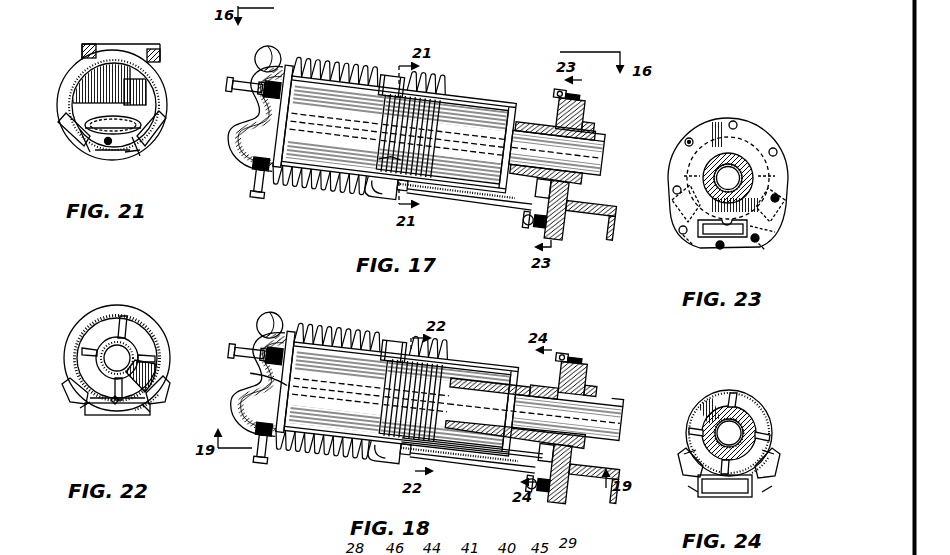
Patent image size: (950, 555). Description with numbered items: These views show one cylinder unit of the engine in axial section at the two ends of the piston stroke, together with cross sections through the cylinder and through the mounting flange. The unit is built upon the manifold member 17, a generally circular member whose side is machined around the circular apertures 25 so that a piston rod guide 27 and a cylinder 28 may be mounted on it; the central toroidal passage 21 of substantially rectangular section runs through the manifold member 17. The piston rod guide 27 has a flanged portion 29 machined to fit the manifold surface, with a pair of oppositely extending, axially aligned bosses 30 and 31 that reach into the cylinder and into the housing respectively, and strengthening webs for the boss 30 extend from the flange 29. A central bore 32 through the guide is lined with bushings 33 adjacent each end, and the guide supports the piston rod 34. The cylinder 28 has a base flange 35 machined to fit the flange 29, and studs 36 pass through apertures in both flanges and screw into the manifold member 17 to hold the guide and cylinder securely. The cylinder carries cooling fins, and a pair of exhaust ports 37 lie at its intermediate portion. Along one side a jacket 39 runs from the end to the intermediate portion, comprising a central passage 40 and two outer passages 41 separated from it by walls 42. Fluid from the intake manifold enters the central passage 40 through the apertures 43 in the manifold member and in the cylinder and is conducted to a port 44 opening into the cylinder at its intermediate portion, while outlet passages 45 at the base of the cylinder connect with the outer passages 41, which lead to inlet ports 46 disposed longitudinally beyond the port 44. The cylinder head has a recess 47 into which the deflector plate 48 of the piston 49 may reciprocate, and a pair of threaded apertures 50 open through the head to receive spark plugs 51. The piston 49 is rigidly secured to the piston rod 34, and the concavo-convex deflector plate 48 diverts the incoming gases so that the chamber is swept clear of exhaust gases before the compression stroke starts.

In FIG. 17, the manifold member 17 is at (597, 128).
In FIG. 18, the manifold member 17 is at (597, 376).
In FIG. 17, the central toroidal passage 21 is at (620, 213).
In FIG. 18, the central toroidal passage 21 is at (617, 467).
In FIG. 17, the circular apertures 25 is at (572, 186).
In FIG. 18, the circular apertures 25 is at (580, 446).
In FIG. 17, the piston rod guide 27 is at (540, 116).
In FIG. 23, the piston rod guide 27 is at (750, 162).
In FIG. 18, the piston rod guide 27 is at (500, 376).
In FIG. 24, the piston rod guide 27 is at (760, 422).
In FIG. 21, the cylinder 28 is at (78, 78).
In FIG. 17, the cylinder 28 is at (346, 64).
In FIG. 23, the cylinder 28 is at (704, 120).
In FIG. 22, the cylinder 28 is at (96, 320).
In FIG. 18, the cylinder 28 is at (346, 329).
In FIG. 24, the cylinder 28 is at (706, 398).
In FIG. 17, the flanged portion 29 is at (582, 100).
In FIG. 23, the flanged portion 29 is at (786, 160).
In FIG. 18, the flanged portion 29 is at (580, 356).
In FIG. 22, the boss 30 is at (120, 316).
In FIG. 18, the boss 30 is at (490, 442).
In FIG. 24, the boss 30 is at (748, 402).
In FIG. 17, the boss 31 is at (602, 146).
In FIG. 23, the boss 31 is at (737, 152).
In FIG. 18, the boss 31 is at (606, 402).
In FIG. 18, the central bore 32 is at (526, 386).
In FIG. 24, the central bore 32 is at (731, 394).
In FIG. 22, the bushings 33 is at (152, 352).
In FIG. 18, the bushings 33 is at (476, 372).
In FIG. 17, the piston rod 34 is at (606, 158).
In FIG. 23, the piston rod 34 is at (710, 160).
In FIG. 22, the piston rod 34 is at (97, 345).
In FIG. 18, the piston rod 34 is at (612, 420).
In FIG. 24, the piston rod 34 is at (766, 433).
In FIG. 17, the base flange 35 is at (561, 98).
In FIG. 18, the base flange 35 is at (565, 355).
In FIG. 17, the studs 36 is at (592, 120).
In FIG. 23, the studs 36 is at (686, 142).
In FIG. 18, the studs 36 is at (592, 368).
In FIG. 21, the exhaust ports 37 is at (134, 48).
In FIG. 17, the exhaust ports 37 is at (397, 70).
In FIG. 18, the exhaust ports 37 is at (398, 338).
In FIG. 21, the jacket 39 is at (166, 136).
In FIG. 17, the jacket 39 is at (462, 203).
In FIG. 23, the jacket 39 is at (770, 233).
In FIG. 22, the jacket 39 is at (150, 413).
In FIG. 18, the jacket 39 is at (372, 470).
In FIG. 24, the jacket 39 is at (766, 487).
In FIG. 21, the central passage 40 is at (82, 152).
In FIG. 17, the central passage 40 is at (486, 203).
In FIG. 23, the central passage 40 is at (706, 236).
In FIG. 22, the central passage 40 is at (100, 406).
In FIG. 18, the central passage 40 is at (470, 462).
In FIG. 24, the central passage 40 is at (712, 492).
In FIG. 21, the outer passages 41 is at (70, 128).
In FIG. 17, the outer passages 41 is at (376, 198).
In FIG. 23, the outer passages 41 is at (686, 216).
In FIG. 22, the outer passages 41 is at (76, 392).
In FIG. 18, the outer passages 41 is at (392, 456).
In FIG. 24, the outer passages 41 is at (694, 470).
In FIG. 21, the walls 42 is at (148, 152).
In FIG. 23, the walls 42 is at (690, 238).
In FIG. 22, the walls 42 is at (80, 410).
In FIG. 24, the walls 42 is at (690, 492).
In FIG. 17, the aperture 43 is at (531, 216).
In FIG. 23, the aperture 43 is at (735, 237).
In FIG. 22, the aperture 43 is at (124, 410).
In FIG. 18, the aperture 43 is at (545, 472).
In FIG. 17, the port 44 is at (412, 197).
In FIG. 22, the port 44 is at (96, 420).
In FIG. 18, the port 44 is at (421, 463).
In FIG. 17, the outlet passages 45 is at (522, 198).
In FIG. 23, the outlet passages 45 is at (686, 181).
In FIG. 18, the outlet passages 45 is at (526, 450).
In FIG. 24, the outlet passages 45 is at (688, 460).
In FIG. 21, the inlet ports 46 is at (108, 150).
In FIG. 17, the inlet ports 46 is at (388, 202).
In FIG. 18, the inlet ports 46 is at (378, 452).
In FIG. 17, the recess 47 is at (258, 136).
In FIG. 18, the recess 47 is at (252, 394).
In FIG. 21, the deflector plate 48 is at (148, 118).
In FIG. 17, the deflector plate 48 is at (393, 162).
In FIG. 18, the deflector plate 48 is at (246, 415).
In FIG. 21, the piston 49 is at (156, 84).
In FIG. 17, the piston 49 is at (472, 108).
In FIG. 18, the piston 49 is at (370, 345).
In FIG. 17, the threaded apertures 50 is at (273, 58).
In FIG. 18, the threaded apertures 50 is at (270, 330).
In FIG. 17, the spark plugs 51 is at (246, 84).
In FIG. 18, the spark plugs 51 is at (246, 352).